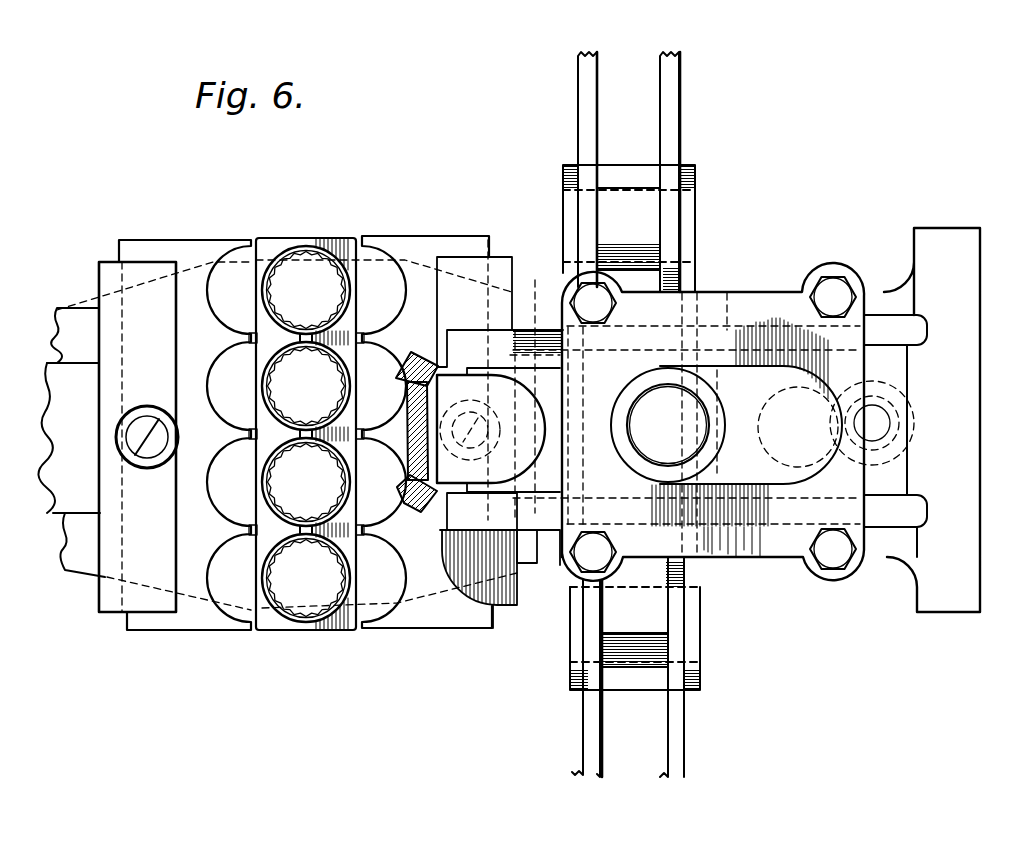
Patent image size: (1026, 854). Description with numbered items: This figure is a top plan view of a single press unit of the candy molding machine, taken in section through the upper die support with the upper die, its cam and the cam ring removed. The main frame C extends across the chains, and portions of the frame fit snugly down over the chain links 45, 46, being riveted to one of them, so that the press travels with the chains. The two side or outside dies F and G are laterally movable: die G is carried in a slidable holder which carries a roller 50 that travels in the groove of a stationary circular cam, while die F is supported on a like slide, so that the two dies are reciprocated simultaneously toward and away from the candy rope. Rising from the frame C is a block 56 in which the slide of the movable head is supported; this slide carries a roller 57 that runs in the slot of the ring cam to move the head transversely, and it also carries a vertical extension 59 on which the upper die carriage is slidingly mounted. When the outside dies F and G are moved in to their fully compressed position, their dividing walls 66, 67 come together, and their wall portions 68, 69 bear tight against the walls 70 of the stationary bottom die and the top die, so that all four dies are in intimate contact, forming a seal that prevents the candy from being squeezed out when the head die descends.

The walls 70 is at (329, 246).
The dividing wall 67 is at (247, 338).
The wall portion 69 is at (217, 370).
The dividing wall 66 is at (367, 336).
The wall portion 68 is at (395, 281).
The vertical extension 59 is at (406, 494).
The roller 57 is at (707, 450).
The roller 50 is at (884, 452).
The block 56 is at (861, 528).
The link 45 is at (570, 670).
The link 46 is at (702, 672).
The side die F is at (193, 629).
The side die G is at (415, 618).
The main frame C is at (960, 412).